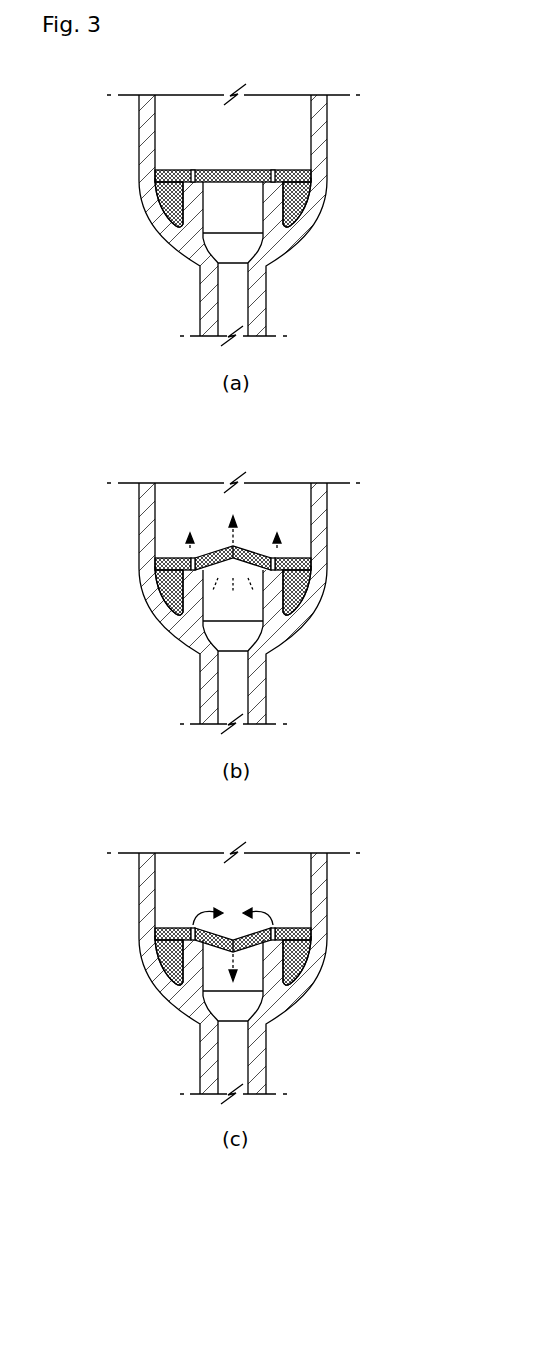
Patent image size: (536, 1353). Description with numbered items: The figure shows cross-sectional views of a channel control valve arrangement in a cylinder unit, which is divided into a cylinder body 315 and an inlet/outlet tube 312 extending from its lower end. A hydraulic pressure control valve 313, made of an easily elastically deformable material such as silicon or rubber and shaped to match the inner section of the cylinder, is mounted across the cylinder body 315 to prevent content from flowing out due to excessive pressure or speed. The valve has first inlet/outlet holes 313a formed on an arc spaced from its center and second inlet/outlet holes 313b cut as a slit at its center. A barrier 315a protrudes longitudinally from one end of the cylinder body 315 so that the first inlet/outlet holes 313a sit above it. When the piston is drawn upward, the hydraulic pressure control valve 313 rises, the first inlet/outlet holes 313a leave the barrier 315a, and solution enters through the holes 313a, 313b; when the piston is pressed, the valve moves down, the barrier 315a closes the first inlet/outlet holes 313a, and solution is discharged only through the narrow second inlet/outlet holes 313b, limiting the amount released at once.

The inlet/outlet tube 312 is at (252, 298).
The hydraulic pressure control valve 313 is at (285, 557).
The first inlet/outlet holes 313a is at (275, 170).
The second inlet/outlet holes 313b is at (236, 170).
The cylinder body 315 is at (148, 162).
The barrier 315a is at (181, 200).